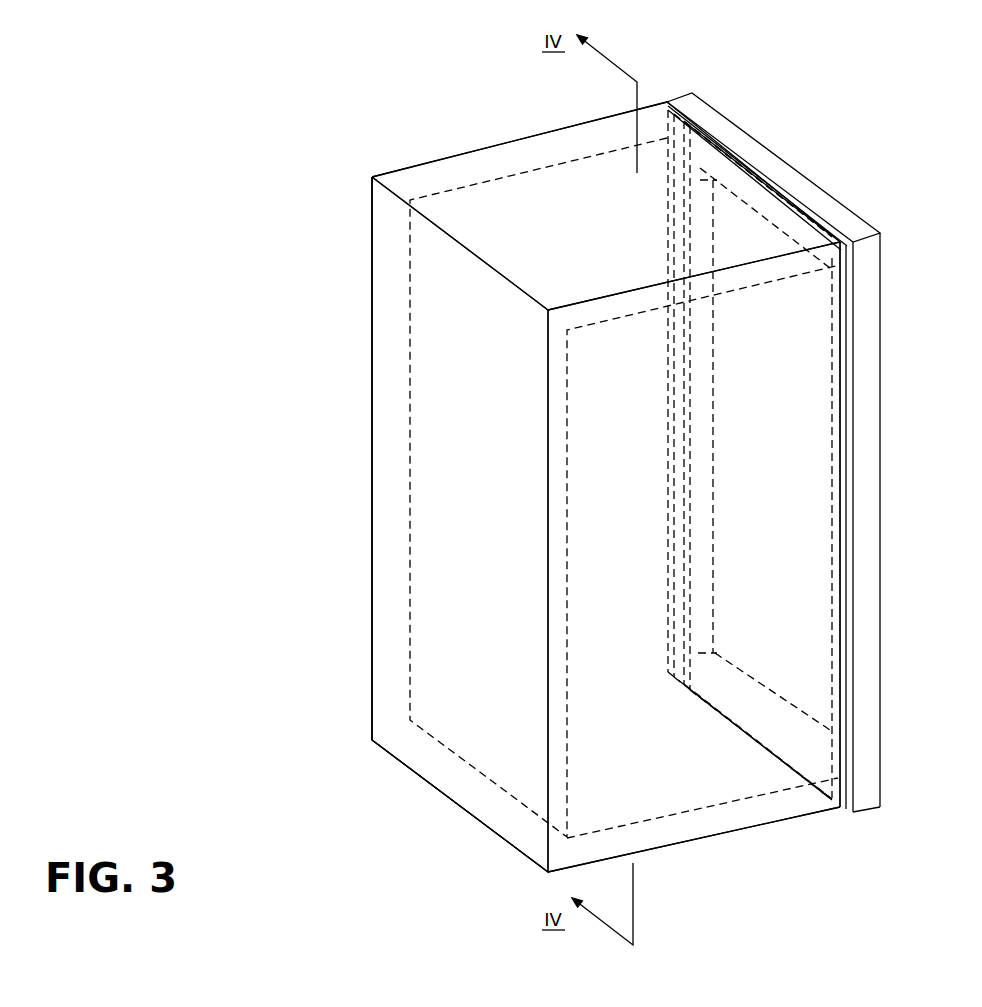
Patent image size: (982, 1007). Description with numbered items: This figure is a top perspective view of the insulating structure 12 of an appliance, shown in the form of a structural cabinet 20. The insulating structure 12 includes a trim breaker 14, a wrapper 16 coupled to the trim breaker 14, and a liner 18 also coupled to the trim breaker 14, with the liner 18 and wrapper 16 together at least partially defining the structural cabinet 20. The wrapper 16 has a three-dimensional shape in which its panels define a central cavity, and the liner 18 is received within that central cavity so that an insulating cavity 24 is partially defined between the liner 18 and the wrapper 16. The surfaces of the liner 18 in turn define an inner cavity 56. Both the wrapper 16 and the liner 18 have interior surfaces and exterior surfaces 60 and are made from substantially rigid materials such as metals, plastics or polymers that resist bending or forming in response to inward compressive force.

The insulating structure 12 is at (387, 115).
The trim breaker 14 is at (770, 167).
The wrapper 16 is at (388, 367).
The liner 18 is at (443, 447).
The structural cabinet 20 is at (270, 308).
The insulating cavity 24 is at (445, 767).
The inner cavity 56 is at (782, 476).
The exterior surfaces 60 is at (512, 163).